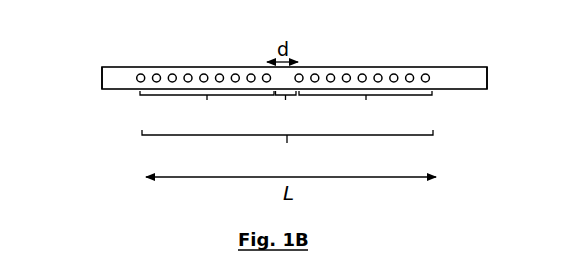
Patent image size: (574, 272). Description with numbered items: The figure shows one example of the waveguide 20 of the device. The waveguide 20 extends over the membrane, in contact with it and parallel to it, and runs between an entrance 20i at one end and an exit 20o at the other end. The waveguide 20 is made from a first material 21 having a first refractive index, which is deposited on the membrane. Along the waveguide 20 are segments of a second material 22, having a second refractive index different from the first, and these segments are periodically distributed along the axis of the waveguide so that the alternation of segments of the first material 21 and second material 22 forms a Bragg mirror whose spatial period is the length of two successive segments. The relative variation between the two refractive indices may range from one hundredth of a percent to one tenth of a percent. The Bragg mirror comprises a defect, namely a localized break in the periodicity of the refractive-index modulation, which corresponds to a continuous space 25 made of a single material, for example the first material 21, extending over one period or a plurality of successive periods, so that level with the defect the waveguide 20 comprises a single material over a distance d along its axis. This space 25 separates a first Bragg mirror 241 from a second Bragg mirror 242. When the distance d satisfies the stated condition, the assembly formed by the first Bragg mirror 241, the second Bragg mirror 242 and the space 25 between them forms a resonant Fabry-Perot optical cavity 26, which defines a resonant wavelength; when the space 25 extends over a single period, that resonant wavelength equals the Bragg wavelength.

The waveguide 20 is at (120, 43).
The entrance 20i is at (100, 76).
The exit 20o is at (490, 78).
The first material 21 is at (211, 71).
The second material 22 is at (329, 71).
The first Bragg mirror 241 is at (207, 108).
The second Bragg mirror 242 is at (365, 108).
The space 25 is at (287, 106).
The resonant cavity 26 is at (287, 148).